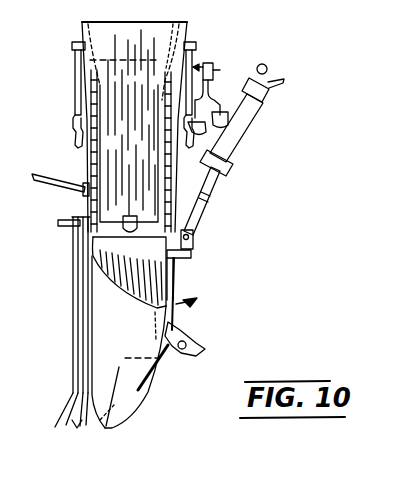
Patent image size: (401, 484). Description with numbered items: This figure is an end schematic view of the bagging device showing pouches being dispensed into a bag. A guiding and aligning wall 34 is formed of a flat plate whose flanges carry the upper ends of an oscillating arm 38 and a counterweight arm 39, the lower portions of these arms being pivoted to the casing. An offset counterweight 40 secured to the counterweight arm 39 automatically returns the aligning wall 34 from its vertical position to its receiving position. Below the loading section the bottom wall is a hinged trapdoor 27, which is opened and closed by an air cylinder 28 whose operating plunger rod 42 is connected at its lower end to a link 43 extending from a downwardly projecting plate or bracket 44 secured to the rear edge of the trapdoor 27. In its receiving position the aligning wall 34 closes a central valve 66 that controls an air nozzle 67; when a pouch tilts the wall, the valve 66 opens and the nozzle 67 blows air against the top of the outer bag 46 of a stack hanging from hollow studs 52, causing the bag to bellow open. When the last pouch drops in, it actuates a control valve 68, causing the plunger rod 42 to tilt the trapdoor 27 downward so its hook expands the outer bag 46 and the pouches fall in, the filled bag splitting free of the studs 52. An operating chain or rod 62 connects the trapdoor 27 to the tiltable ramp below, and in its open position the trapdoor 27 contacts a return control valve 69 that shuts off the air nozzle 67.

The guiding and aligning wall 34 is at (125, 132).
The oscillating arm 38 is at (76, 78).
The counterweight arm 39 is at (194, 60).
The central valve 66 is at (214, 66).
The offset counterweight 40 is at (200, 97).
The air cylinder 28 is at (241, 118).
The operating plunger rod 42 is at (203, 193).
The link 43 is at (194, 242).
The downwardly projecting plate or bracket 44 is at (186, 254).
The trapdoor 27 is at (175, 265).
The return control valve 69 is at (198, 305).
The air nozzle 67 is at (190, 346).
The operating chain or rod 62 is at (164, 356).
The outer bag 46 is at (80, 306).
The hollow stud 52 is at (58, 223).
The control valve 68 is at (125, 218).